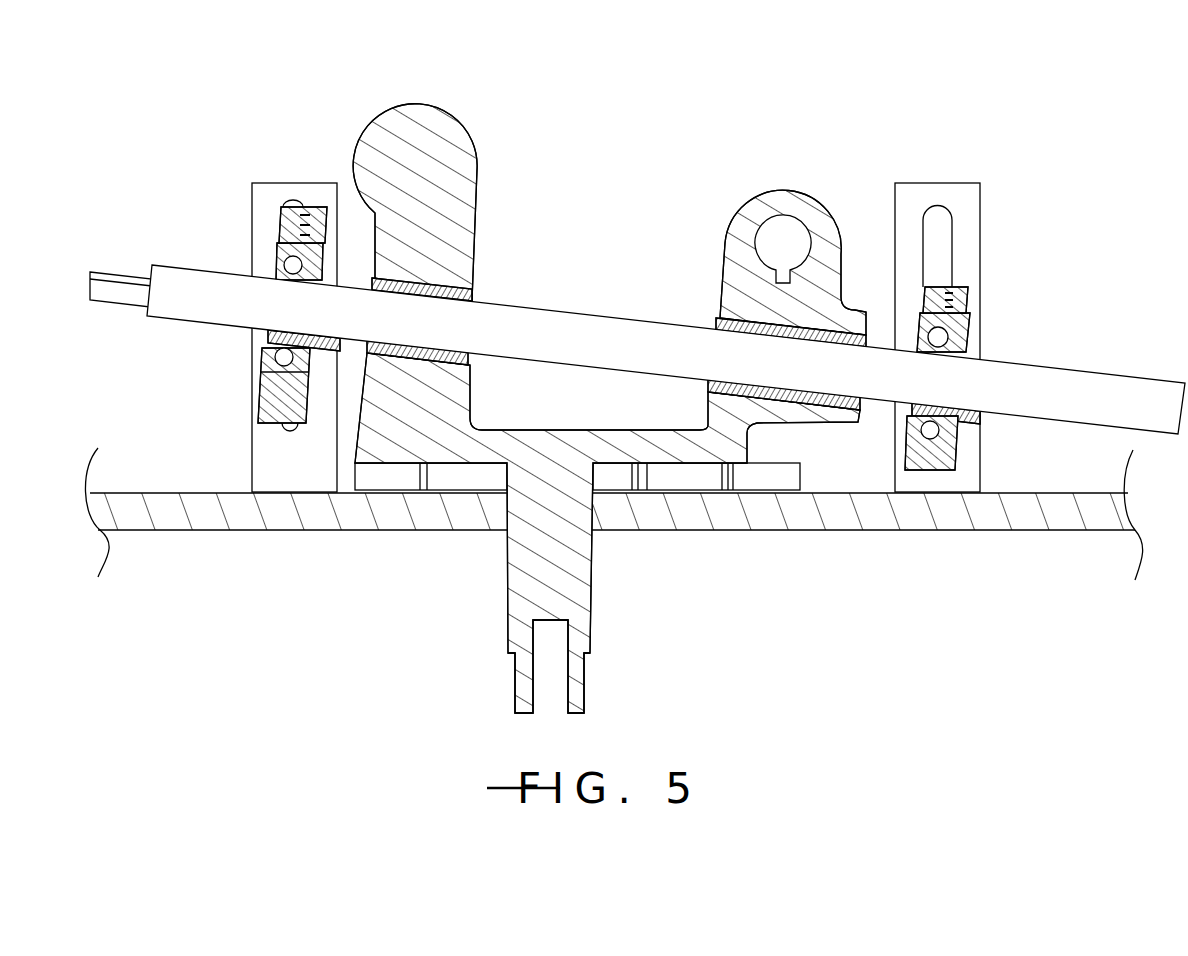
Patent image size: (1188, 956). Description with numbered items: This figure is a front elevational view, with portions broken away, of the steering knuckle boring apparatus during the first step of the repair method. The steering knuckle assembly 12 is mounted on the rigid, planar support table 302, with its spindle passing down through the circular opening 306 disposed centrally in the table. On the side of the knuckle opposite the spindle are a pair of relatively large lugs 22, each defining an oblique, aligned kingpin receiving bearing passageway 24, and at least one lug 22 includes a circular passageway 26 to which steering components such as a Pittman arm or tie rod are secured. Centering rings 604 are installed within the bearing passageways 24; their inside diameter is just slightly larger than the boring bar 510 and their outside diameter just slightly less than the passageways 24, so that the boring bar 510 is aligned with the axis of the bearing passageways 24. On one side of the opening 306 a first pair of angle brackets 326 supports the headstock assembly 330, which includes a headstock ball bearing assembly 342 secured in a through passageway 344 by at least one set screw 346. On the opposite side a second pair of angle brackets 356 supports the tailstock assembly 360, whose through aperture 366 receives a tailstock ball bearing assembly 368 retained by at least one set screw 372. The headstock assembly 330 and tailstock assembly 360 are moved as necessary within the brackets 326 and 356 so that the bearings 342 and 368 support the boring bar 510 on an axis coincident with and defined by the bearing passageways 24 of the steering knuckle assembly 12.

The steering knuckle assembly 12 is at (613, 152).
The lugs 22 is at (616, 408).
The bearing passageways 24 is at (440, 365).
The circular passageway 26 is at (795, 220).
The support table 302 is at (960, 520).
The circular opening 306 is at (623, 520).
The first pair of angle brackets 326 is at (280, 198).
The headstock assembly 330 is at (250, 268).
The headstock ball bearing assembly 342 is at (290, 286).
The through passageway 344 is at (280, 243).
The set screw 346 is at (294, 207).
The second pair of angle brackets 356 is at (970, 235).
The tailstock assembly 360 is at (970, 334).
The through aperture 366 is at (923, 316).
The tailstock ball bearing assembly 368 is at (955, 362).
The set screw 372 is at (952, 287).
The boring bar 510 is at (1097, 387).
The centering rings 604 is at (470, 290).